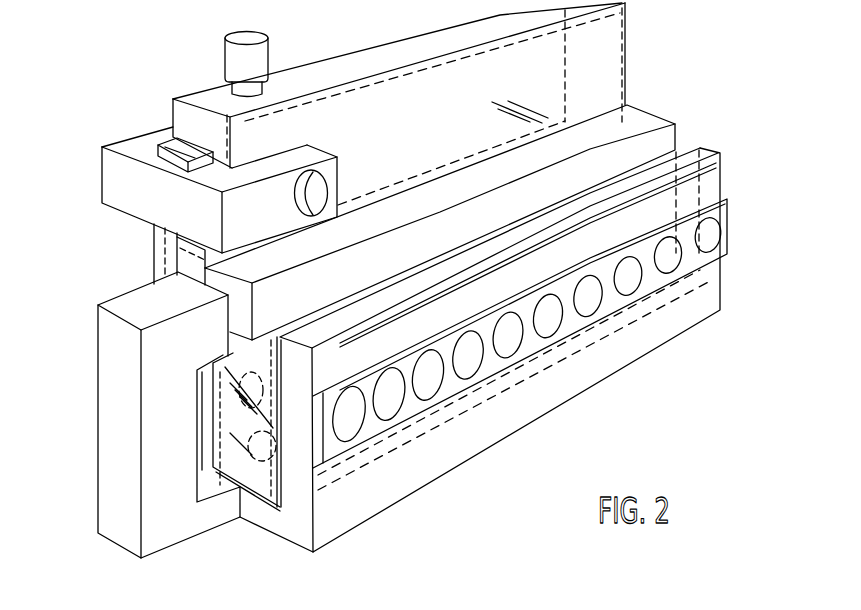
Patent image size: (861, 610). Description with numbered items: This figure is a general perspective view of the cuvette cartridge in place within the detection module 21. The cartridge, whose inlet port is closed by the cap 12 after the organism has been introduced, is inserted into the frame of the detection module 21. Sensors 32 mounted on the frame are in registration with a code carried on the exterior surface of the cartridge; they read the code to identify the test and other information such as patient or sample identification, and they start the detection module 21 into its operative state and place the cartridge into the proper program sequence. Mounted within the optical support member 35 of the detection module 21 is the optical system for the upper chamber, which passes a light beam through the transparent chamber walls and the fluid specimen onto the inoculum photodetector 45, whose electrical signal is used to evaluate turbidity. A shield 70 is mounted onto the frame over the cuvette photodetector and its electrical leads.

The cap 12 is at (271, 53).
The detection module 21 is at (702, 76).
The sensors 32 is at (158, 151).
The optical support member 35 is at (118, 180).
The inoculum photodetector 45 is at (322, 190).
The shield 70 is at (728, 241).